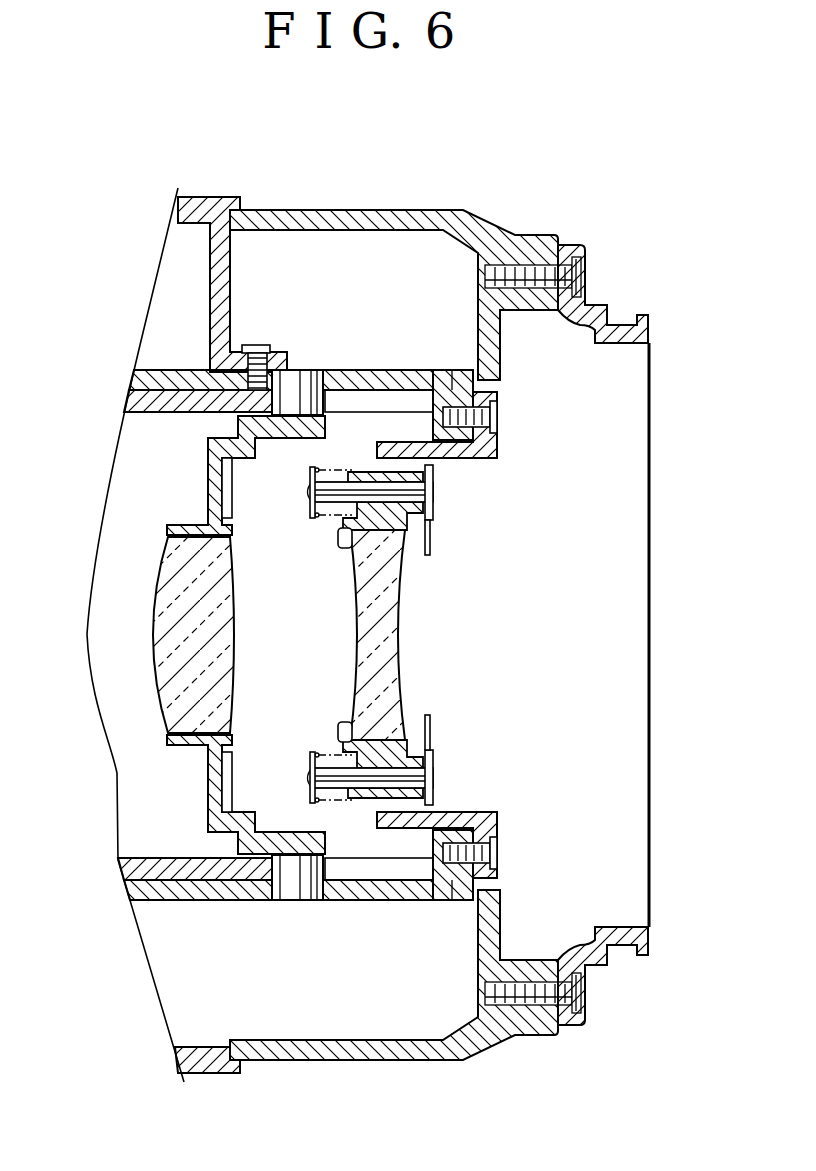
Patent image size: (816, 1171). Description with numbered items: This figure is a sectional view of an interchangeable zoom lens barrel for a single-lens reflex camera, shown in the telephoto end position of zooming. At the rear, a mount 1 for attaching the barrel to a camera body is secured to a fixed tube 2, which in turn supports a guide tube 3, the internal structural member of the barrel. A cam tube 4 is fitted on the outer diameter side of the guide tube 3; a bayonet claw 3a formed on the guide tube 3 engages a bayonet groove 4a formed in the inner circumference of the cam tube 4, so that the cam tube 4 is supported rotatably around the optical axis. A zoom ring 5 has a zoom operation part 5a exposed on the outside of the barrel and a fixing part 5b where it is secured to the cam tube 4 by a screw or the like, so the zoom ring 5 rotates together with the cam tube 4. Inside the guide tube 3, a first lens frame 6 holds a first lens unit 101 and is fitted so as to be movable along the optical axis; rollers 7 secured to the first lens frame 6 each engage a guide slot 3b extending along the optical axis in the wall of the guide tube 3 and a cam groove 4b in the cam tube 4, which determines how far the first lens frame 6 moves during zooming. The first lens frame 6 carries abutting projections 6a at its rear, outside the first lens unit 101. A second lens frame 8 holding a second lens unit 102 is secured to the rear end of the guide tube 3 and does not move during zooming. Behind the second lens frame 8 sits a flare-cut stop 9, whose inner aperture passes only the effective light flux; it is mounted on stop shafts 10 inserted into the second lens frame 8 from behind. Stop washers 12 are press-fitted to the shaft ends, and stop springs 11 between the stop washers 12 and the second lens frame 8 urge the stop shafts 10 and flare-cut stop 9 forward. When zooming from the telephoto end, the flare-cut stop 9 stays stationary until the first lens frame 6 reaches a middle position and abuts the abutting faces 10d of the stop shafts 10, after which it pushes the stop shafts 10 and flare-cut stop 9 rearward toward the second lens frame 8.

The mount 1 is at (598, 306).
The fixed tube 2 is at (452, 215).
The guide tube 3 is at (148, 403).
The bayonet claw 3a is at (480, 372).
The guide slot 3b is at (387, 400).
The cam tube 4 is at (152, 380).
The bayonet groove 4a is at (444, 376).
The cam groove 4b is at (333, 392).
The zoom ring 5 is at (195, 207).
The zoom operation part 5a is at (235, 210).
The fixing part 5b is at (271, 350).
The first lens frame 6 is at (198, 447).
The abutting projections 6a is at (215, 468).
The rollers 7 is at (297, 385).
The second lens frame 8 is at (493, 450).
The flare-cut stop 9 is at (413, 547).
The stop shafts 10 is at (417, 490).
The abutting faces 10d is at (307, 500).
The stop springs 11 is at (337, 528).
The stop washers 12 is at (300, 516).
The first lens unit 101 is at (176, 682).
The second lens unit 102 is at (392, 690).